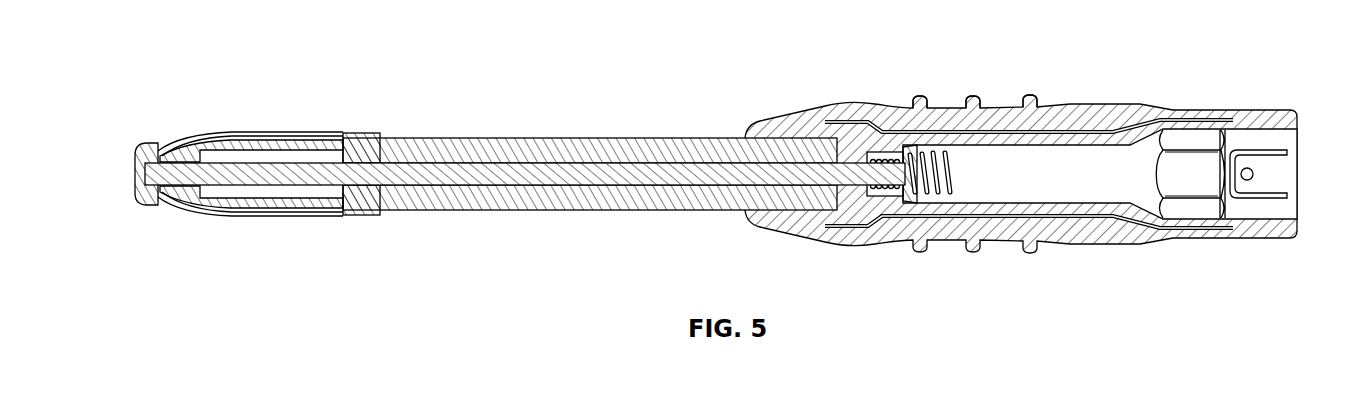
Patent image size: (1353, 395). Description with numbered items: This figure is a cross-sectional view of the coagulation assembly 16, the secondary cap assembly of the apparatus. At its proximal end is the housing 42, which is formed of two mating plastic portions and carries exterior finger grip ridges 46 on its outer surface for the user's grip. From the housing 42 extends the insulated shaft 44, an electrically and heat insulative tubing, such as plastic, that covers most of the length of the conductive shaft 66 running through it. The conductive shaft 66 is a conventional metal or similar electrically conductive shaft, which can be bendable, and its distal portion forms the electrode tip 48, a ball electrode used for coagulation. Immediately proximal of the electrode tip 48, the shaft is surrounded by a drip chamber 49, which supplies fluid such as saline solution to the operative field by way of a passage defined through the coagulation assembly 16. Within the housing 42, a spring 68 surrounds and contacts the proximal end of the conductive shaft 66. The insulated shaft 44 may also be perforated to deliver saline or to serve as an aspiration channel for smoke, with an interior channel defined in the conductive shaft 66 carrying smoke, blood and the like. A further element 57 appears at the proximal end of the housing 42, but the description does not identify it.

The coagulation assembly 16 is at (424, 50).
The housing 42 is at (850, 108).
The insulated shaft 44 is at (597, 148).
The finger grip ridges 46 is at (973, 98).
The electrode tip 48 is at (137, 190).
The drip chamber 49 is at (285, 132).
The retaining clip 57 is at (1254, 173).
The conductive shaft 66 is at (523, 178).
The spring 68 is at (936, 195).